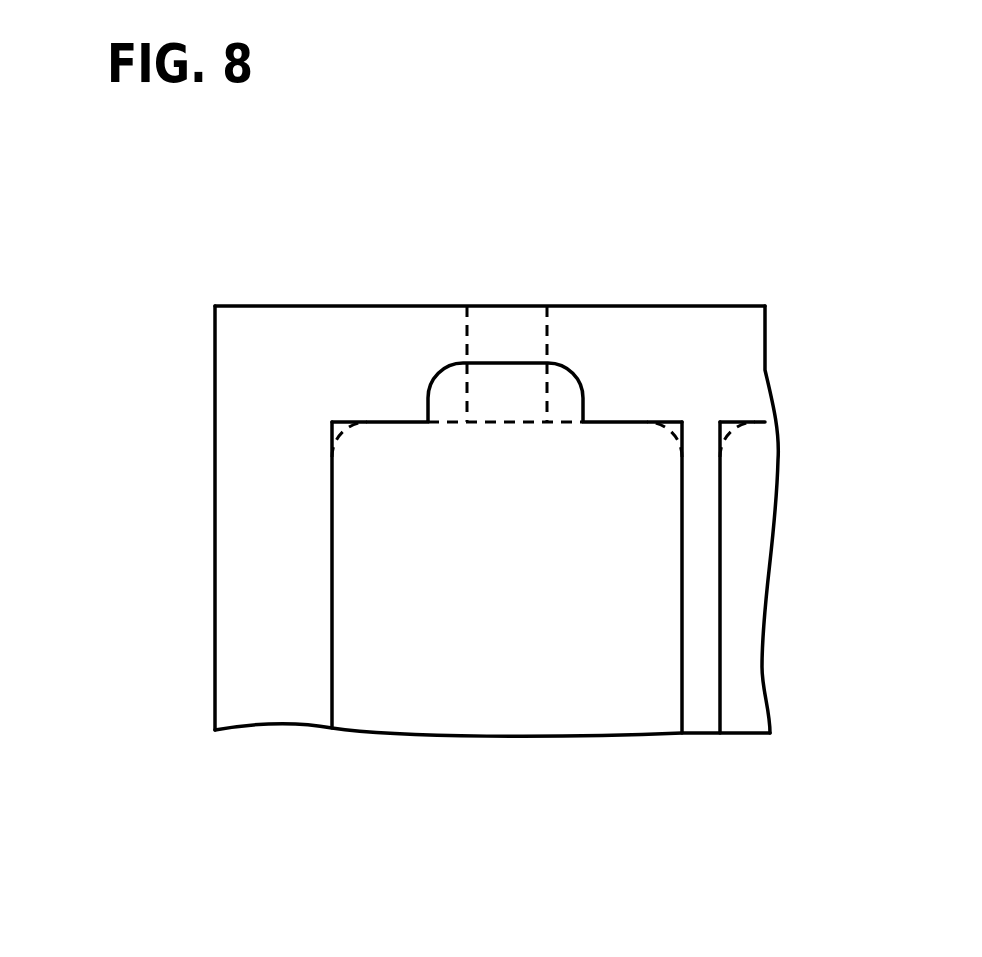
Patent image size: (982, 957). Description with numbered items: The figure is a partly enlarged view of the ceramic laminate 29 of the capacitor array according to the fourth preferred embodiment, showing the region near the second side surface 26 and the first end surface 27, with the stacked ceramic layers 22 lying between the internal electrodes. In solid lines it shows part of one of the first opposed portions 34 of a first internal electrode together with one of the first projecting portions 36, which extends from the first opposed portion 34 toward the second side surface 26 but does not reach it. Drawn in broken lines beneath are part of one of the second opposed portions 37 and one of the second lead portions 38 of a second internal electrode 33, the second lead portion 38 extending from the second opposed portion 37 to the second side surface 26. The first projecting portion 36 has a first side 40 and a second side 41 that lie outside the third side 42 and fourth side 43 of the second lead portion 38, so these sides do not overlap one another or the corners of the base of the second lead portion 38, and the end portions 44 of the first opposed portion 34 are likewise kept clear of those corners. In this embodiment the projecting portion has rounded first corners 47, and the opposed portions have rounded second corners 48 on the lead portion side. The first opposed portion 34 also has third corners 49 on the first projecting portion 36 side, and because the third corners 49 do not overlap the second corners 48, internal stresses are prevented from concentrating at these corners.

The ceramic layers 22 is at (765, 387).
The second side surface 26 is at (611, 306).
The first end surface 27 is at (215, 700).
The ceramic laminate 29 is at (277, 728).
The second internal electrodes 33 is at (330, 665).
The first opposed portions 34 is at (360, 512).
The first projecting portions 36 is at (508, 373).
The second opposed portions 37 is at (373, 587).
The second lead portions 38 is at (489, 318).
The first side 40 is at (428, 405).
The second side 41 is at (583, 408).
The third side 42 is at (460, 352).
The fourth side 43 is at (548, 348).
The end portions 44 is at (385, 422).
The rounded first corners 47 is at (430, 383).
The rounded second corners 48 is at (687, 430).
The third corners 49 is at (668, 420).